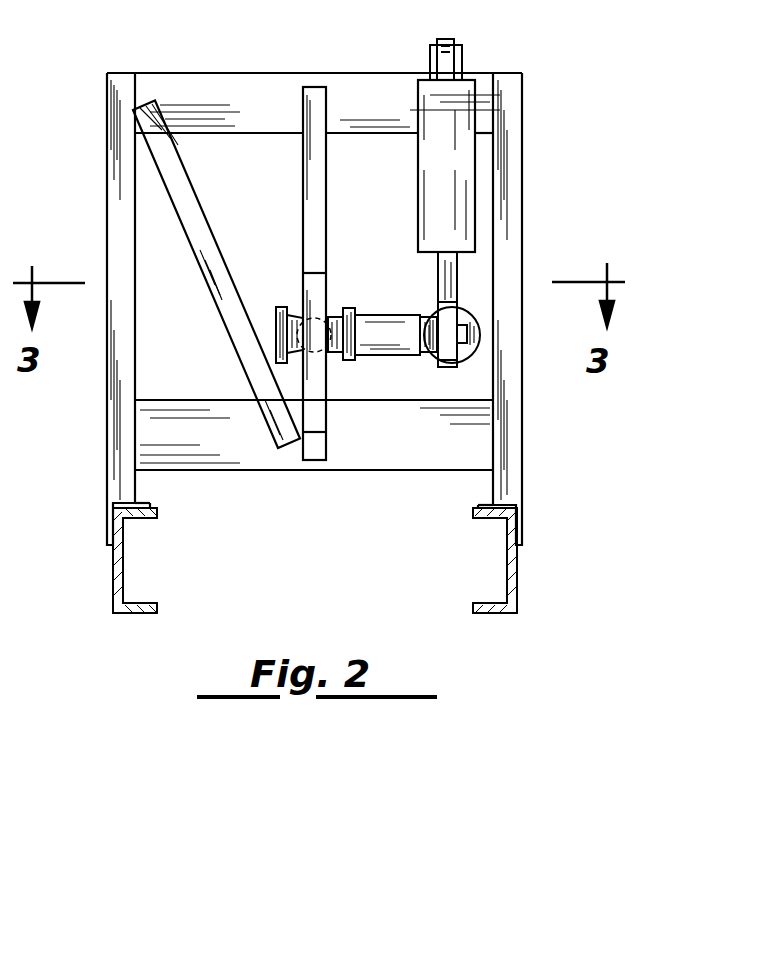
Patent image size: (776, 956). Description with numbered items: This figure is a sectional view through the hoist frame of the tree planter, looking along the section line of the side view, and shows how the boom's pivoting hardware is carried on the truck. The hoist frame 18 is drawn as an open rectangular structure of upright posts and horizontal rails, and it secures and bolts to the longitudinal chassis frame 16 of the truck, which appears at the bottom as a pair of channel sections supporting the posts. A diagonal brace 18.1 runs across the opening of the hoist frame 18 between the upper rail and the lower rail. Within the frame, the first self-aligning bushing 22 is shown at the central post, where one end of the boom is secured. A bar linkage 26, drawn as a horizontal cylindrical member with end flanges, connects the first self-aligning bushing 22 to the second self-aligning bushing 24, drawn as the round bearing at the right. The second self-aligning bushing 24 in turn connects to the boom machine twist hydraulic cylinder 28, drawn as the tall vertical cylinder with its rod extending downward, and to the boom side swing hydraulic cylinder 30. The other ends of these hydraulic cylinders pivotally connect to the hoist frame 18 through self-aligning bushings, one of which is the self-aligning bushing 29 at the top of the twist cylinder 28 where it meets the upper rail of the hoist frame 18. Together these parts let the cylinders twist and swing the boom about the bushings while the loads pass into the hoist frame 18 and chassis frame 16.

The chassis frame 16 is at (520, 573).
The hoist frame 18 is at (522, 172).
The diagonal brace 18.1 is at (196, 190).
The first self-aligning bushing 22 is at (295, 308).
The second self-aligning bushing 24 is at (455, 366).
The bar linkage 26 is at (380, 358).
The boom machine twist hydraulic cylinder 28 is at (418, 190).
The self-aligning bushing 29 is at (462, 55).
The boom side swing hydraulic cylinder 30 is at (463, 310).